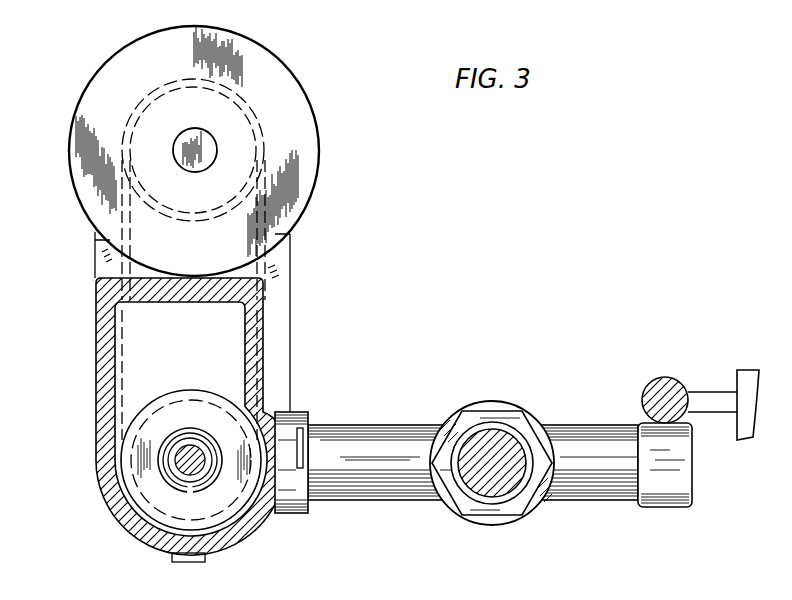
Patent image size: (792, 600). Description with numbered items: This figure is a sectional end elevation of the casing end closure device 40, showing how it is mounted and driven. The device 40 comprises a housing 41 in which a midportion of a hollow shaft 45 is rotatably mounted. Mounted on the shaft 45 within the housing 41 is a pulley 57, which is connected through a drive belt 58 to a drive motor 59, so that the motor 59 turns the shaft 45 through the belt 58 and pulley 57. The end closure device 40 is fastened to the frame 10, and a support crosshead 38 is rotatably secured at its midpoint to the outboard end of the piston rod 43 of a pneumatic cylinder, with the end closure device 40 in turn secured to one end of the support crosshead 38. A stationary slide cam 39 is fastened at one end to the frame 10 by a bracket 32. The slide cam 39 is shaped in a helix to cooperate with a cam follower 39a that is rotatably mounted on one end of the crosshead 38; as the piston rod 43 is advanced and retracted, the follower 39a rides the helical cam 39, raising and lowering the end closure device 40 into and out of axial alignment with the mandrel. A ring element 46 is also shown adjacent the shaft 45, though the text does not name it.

The frame 10 is at (760, 372).
The bracket 32 is at (705, 394).
The support crosshead 38 is at (368, 433).
The stationary slide cam 39 is at (660, 390).
The cam follower 39a is at (684, 508).
The casing end closure device 40 is at (302, 256).
The housing 41 is at (100, 407).
The piston rod 43 is at (490, 437).
The hollow shaft 45 is at (180, 450).
The bearing ring 46 is at (210, 460).
The pulley 57 is at (202, 393).
The drive belt 58 is at (263, 193).
The drive motor 59 is at (320, 122).